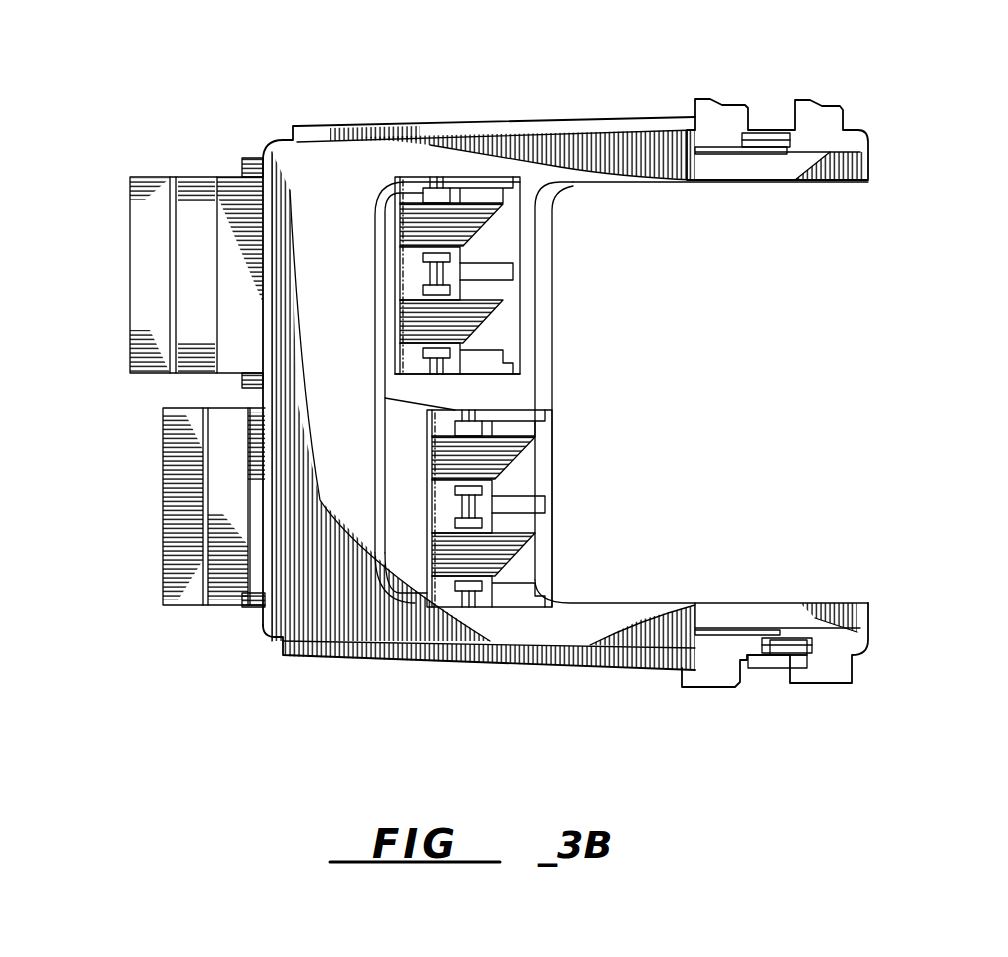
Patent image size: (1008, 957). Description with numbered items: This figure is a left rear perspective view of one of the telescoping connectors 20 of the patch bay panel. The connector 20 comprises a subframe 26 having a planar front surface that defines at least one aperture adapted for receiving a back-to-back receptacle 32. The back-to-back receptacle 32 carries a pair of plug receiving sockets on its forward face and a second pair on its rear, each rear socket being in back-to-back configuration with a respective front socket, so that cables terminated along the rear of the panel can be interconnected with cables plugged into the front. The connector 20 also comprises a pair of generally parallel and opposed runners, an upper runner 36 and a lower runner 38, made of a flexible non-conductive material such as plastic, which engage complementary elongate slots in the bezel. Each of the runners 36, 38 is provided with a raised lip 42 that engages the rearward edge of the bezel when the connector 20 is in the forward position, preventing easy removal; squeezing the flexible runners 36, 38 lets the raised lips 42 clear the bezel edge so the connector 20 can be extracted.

The telescoping connector 20 is at (403, 125).
The subframe 26 is at (262, 632).
The back-to-back receptacle 32 is at (243, 303).
The upper runner 36 is at (858, 182).
The lower runner 38 is at (772, 662).
The raised lip 42 is at (730, 130).